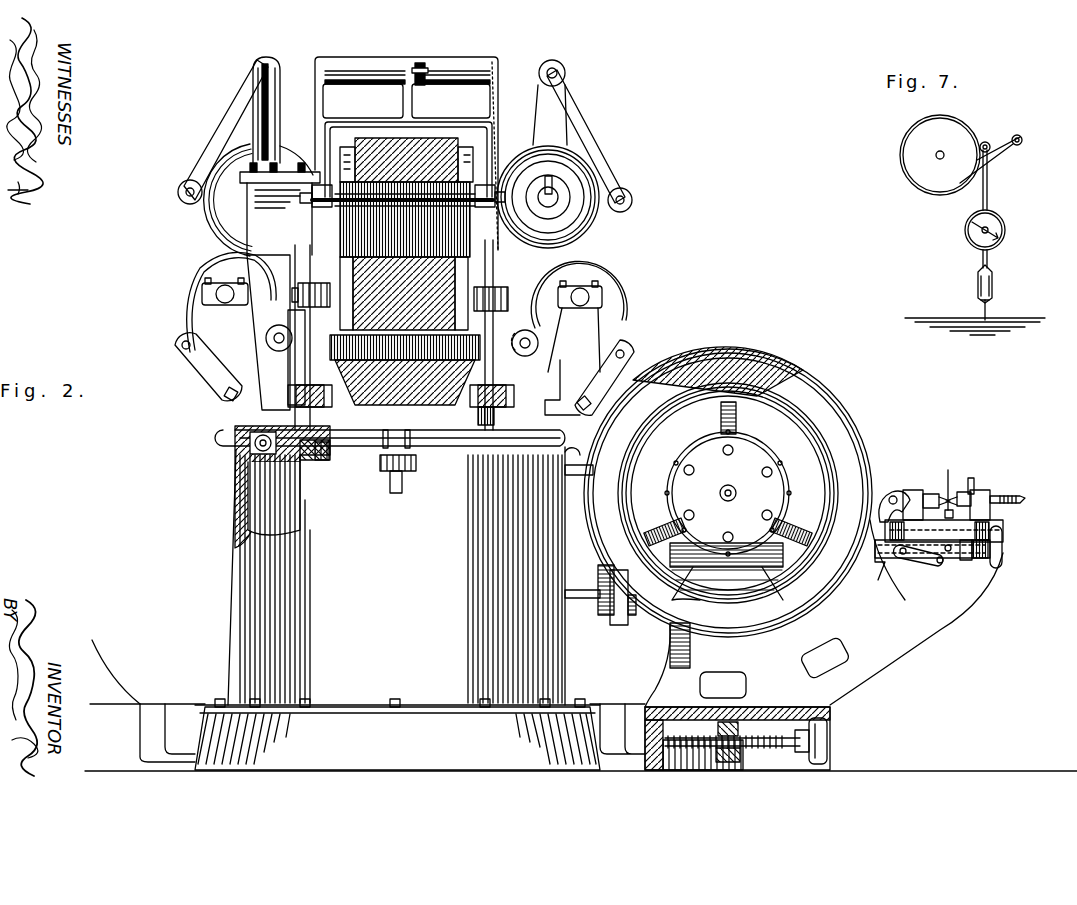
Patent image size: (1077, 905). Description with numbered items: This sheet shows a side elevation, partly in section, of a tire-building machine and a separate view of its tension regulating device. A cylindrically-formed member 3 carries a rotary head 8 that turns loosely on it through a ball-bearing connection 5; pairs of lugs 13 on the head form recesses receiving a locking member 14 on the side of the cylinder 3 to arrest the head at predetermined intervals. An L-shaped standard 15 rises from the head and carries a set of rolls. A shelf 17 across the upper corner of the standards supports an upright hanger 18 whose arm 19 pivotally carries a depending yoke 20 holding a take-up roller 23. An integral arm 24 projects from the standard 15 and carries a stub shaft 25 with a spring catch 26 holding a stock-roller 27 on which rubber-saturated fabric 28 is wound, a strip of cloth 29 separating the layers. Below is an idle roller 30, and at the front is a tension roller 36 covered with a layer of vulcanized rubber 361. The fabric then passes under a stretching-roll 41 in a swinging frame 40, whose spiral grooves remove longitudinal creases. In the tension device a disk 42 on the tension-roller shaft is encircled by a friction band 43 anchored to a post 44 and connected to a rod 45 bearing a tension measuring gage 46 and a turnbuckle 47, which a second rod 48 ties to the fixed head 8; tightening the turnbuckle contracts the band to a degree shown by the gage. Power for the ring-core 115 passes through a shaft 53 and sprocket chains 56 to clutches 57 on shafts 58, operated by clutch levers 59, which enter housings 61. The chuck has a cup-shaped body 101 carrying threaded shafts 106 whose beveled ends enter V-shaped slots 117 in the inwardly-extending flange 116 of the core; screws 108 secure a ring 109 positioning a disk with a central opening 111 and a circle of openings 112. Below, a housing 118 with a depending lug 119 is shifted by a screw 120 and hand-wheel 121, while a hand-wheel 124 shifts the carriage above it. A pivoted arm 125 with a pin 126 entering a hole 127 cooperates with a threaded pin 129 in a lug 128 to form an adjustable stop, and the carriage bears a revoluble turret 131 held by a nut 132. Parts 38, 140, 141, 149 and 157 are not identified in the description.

In FIG. 2, the cylindrically-formed member 3 is at (581, 609).
In FIG. 2, the ball-bearing connection 5 is at (237, 455).
In FIG. 2, the rotary head 8 is at (330, 446).
In FIG. 7, the rotary head 8 is at (1002, 330).
In FIG. 2, the lugs 13 is at (382, 436).
In FIG. 2, the locking member 14 is at (396, 495).
In FIG. 2, the standard 15 is at (278, 337).
In FIG. 2, the shelf 17 is at (262, 182).
In FIG. 2, the upright hanger 18 is at (300, 158).
In FIG. 2, the laterally extending arm 19 is at (355, 71).
In FIG. 2, the depending yoke 20 is at (420, 63).
In FIG. 2, the take-up roller 23 is at (345, 190).
In FIG. 2, the integral arm 24 is at (330, 213).
In FIG. 2, the stub shaft 25 is at (545, 207).
In FIG. 2, the spring catch 26 is at (552, 178).
In FIG. 2, the stock-roller 27 is at (462, 150).
In FIG. 2, the rubber-saturated fabric 28 is at (420, 156).
In FIG. 2, the strip of muslin or cloth 29 is at (470, 190).
In FIG. 2, the idle roller 30 is at (538, 343).
In FIG. 2, the tension roller 36 is at (202, 292).
In FIG. 2, the layer of vulcanized rubber 361 is at (600, 272).
In FIG. 2, the nut 38 is at (488, 412).
In FIG. 2, the swinging frame 40 is at (203, 368).
In FIG. 2, the stretching-roll 41 is at (440, 370).
In FIG. 2, the disk 42 is at (296, 300).
In FIG. 7, the disk 42 is at (941, 172).
In FIG. 2, the friction band 43 is at (270, 292).
In FIG. 7, the friction band 43 is at (905, 180).
In FIG. 7, the post 44 is at (1022, 136).
In FIG. 2, the rod 45 is at (276, 342).
In FIG. 7, the rod 45 is at (990, 196).
In FIG. 7, the tension measuring gage 46 is at (966, 240).
In FIG. 7, the turnbuckle 47 is at (994, 280).
In FIG. 7, the second rod 48 is at (980, 312).
In FIG. 2, the shaft 53 is at (575, 476).
In FIG. 2, the sprocket chains 56 is at (600, 612).
In FIG. 2, the clutches 57 is at (618, 625).
In FIG. 2, the shafts 58 is at (575, 590).
In FIG. 2, the clutch lever 59 is at (636, 610).
In FIG. 2, the housing 61 is at (670, 650).
In FIG. 2, the cup-shaped body portion 101 is at (690, 570).
In FIG. 2, the exteriorly threaded shafts 106 is at (738, 420).
In FIG. 2, the screws 108 is at (690, 452).
In FIG. 2, the annular flange or ring 109 is at (740, 590).
In FIG. 2, the central opening 111 is at (726, 500).
In FIG. 2, the openings 112 is at (762, 471).
In FIG. 2, the ring-core 115 is at (812, 394).
In FIG. 2, the inwardly-extending flange 116 is at (823, 455).
In FIG. 2, the V-shaped slots 117 is at (812, 560).
In FIG. 2, the housing 118 is at (775, 667).
In FIG. 2, the depending lug 119 is at (735, 747).
In FIG. 2, the screw 120 is at (692, 766).
In FIG. 2, the hand-wheel 121 is at (828, 738).
In FIG. 2, the hand-wheel 124 is at (1002, 548).
In FIG. 2, the pivoted arm 125 is at (880, 560).
In FIG. 2, the pin 126 is at (937, 566).
In FIG. 2, the hole 127 is at (950, 552).
In FIG. 2, the lug 128 is at (968, 562).
In FIG. 2, the pin 129 is at (982, 560).
In FIG. 2, the revoluble head or turret 131 is at (1004, 524).
In FIG. 2, the nut 132 is at (942, 483).
In FIG. 2, the clamp 140 is at (898, 490).
In FIG. 2, the ring 141 is at (868, 512).
In FIG. 2, the screw 149 is at (1015, 496).
In FIG. 2, the post 157 is at (975, 480).